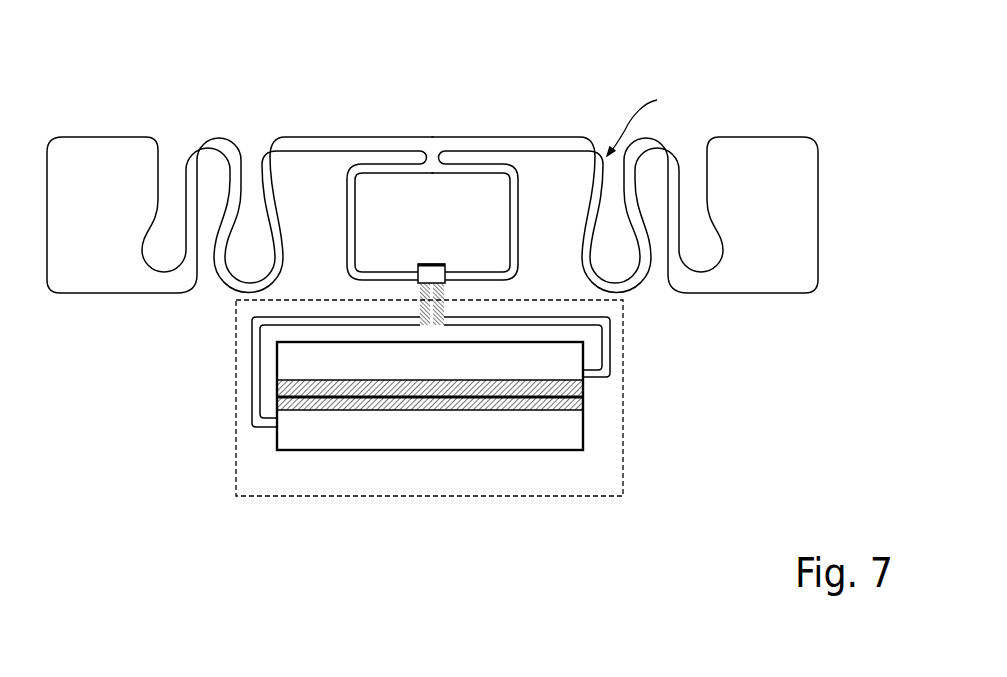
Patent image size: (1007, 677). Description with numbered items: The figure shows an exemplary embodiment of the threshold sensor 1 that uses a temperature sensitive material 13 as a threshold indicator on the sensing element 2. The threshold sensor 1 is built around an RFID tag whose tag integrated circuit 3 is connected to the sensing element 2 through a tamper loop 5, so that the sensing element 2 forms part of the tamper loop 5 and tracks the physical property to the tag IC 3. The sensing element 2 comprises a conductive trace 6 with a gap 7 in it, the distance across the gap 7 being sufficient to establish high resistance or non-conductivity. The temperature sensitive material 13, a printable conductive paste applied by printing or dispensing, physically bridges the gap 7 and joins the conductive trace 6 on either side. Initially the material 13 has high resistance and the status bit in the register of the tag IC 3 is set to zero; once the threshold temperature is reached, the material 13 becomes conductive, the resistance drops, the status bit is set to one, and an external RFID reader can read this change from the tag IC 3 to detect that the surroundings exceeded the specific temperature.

The threshold sensor 1 is at (787, 60).
The sensing element 2 is at (458, 442).
The tag integrated circuit 3 is at (430, 256).
The tamper loop 5 is at (320, 497).
The conductive trace 6 is at (612, 348).
The gap 7 is at (593, 399).
The temperature sensitive material 13 is at (278, 382).